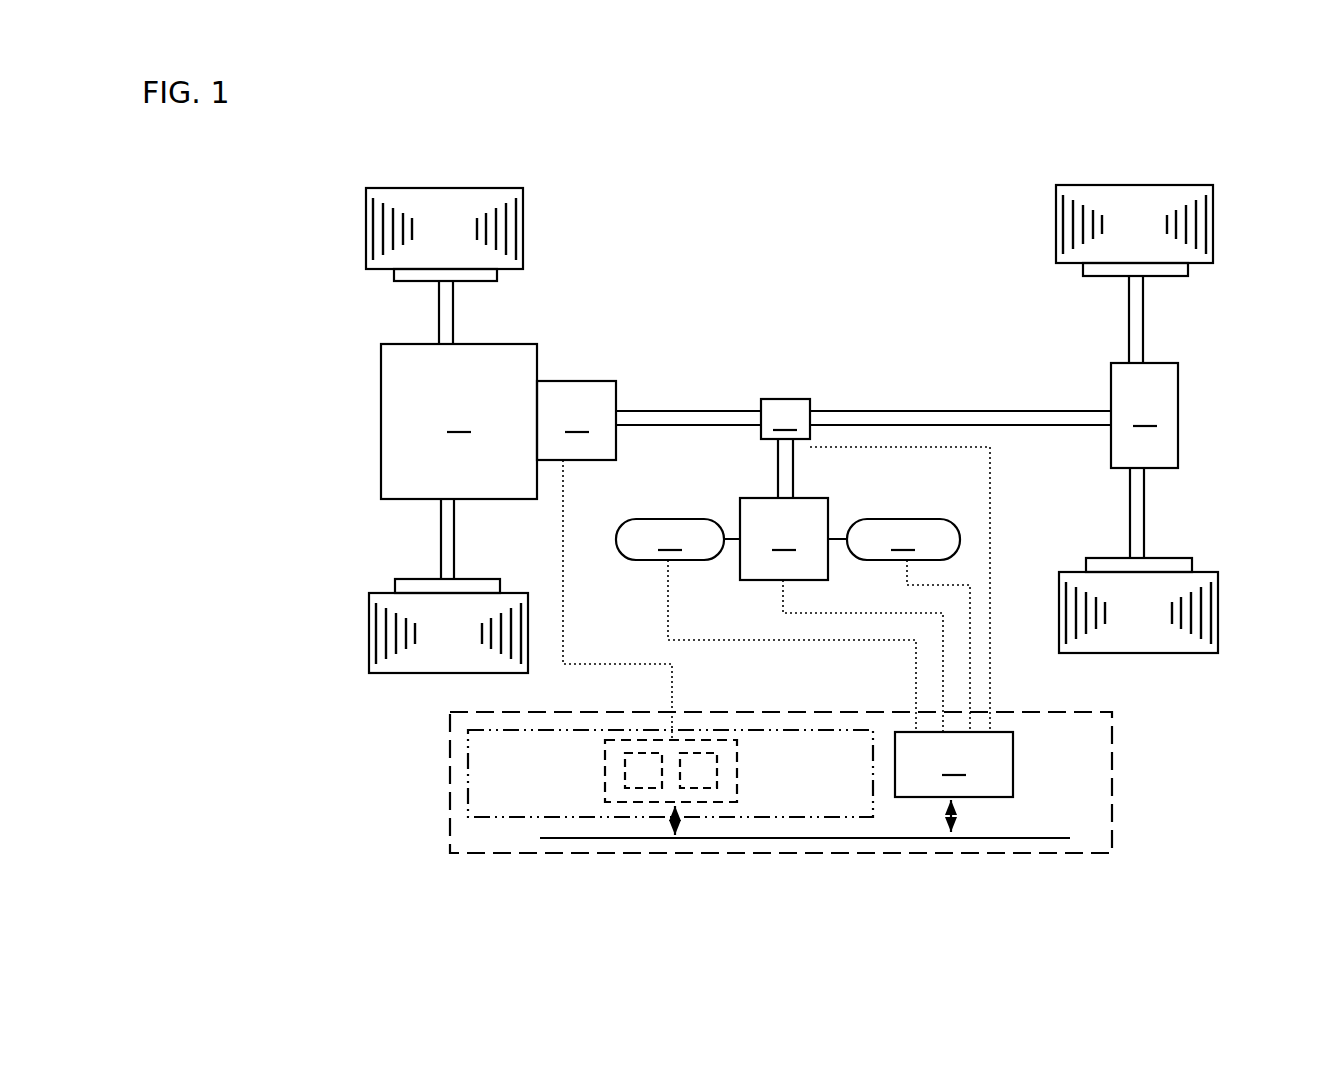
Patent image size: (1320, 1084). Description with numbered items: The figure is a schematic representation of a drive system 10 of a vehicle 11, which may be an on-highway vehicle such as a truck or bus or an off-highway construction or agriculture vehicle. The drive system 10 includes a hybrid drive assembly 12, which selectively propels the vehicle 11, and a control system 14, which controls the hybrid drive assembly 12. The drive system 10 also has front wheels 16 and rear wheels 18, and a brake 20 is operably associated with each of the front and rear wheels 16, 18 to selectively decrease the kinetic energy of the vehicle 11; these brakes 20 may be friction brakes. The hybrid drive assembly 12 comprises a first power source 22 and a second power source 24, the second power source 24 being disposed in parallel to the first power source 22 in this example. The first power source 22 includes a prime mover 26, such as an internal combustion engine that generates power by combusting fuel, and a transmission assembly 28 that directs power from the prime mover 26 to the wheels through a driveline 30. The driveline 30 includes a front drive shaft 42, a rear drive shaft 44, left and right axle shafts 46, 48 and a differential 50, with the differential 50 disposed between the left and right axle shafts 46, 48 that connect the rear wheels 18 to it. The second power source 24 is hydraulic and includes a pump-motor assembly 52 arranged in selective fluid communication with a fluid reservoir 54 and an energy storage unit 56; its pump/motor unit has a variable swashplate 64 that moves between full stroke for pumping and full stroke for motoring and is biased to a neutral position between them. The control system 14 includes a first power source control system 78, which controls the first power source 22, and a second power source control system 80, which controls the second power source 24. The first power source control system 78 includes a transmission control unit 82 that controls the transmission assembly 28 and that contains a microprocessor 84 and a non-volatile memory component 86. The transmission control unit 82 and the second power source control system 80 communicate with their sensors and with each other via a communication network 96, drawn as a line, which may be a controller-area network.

The drive system 10 is at (306, 257).
The vehicle 11 is at (992, 186).
The hybrid drive assembly 12 is at (792, 341).
The control system 14 is at (1118, 757).
The front wheels 16 is at (523, 232).
The rear wheels 18 is at (1213, 230).
The brake 20 is at (415, 281).
The first power source 22 is at (570, 368).
The second power source 24 is at (686, 488).
The prime mover 26 is at (459, 421).
The transmission assembly 28 is at (576, 420).
The driveline 30 is at (866, 404).
The front drive shaft 42 is at (662, 411).
The rear drive shaft 44 is at (943, 411).
The left axle shaft 46 is at (1146, 517).
The right axle shaft 48 is at (1143, 348).
The differential 50 is at (1144, 415).
The pump-motor assembly 52 is at (784, 539).
The fluid reservoir 54 is at (670, 539).
The energy storage unit 56 is at (903, 539).
The swashplate 64 is at (785, 419).
The first power source control system 78 is at (462, 760).
The second power source control system 80 is at (954, 764).
The transmission control unit 82 is at (605, 777).
The microprocessor 84 is at (648, 788).
The non-volatile memory component 86 is at (712, 788).
The communication network 96 is at (787, 838).